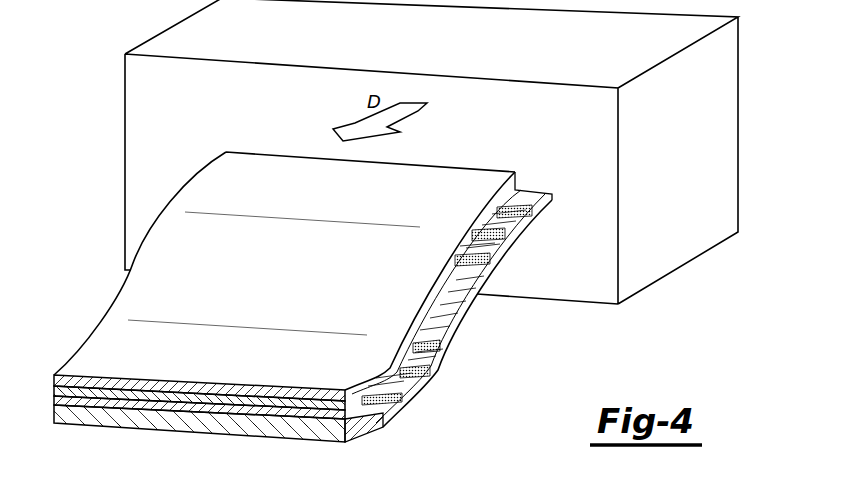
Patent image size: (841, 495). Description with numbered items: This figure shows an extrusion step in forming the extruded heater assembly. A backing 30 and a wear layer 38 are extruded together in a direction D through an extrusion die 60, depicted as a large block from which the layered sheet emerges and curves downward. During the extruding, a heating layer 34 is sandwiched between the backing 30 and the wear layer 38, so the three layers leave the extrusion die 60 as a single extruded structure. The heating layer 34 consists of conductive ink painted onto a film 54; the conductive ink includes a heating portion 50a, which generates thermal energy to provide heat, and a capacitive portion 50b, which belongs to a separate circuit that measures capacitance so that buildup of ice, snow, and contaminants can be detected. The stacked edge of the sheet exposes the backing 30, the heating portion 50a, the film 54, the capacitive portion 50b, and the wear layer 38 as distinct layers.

The backing 30 is at (440, 185).
The heating layer 34 is at (445, 313).
The wear layer 38 is at (352, 428).
The heating portion 50a is at (402, 397).
The capacitive portion 50b is at (415, 363).
The film 54 is at (402, 385).
The extrusion die 60 is at (707, 200).